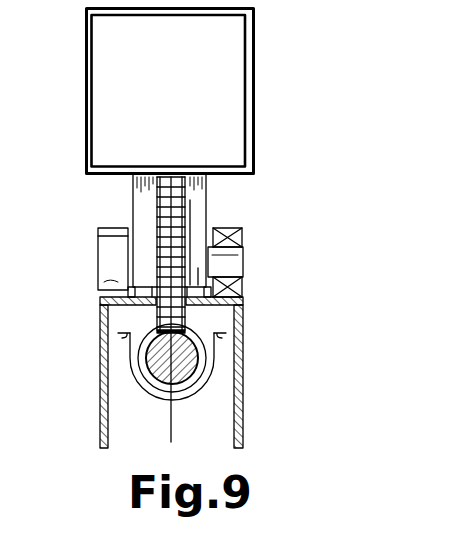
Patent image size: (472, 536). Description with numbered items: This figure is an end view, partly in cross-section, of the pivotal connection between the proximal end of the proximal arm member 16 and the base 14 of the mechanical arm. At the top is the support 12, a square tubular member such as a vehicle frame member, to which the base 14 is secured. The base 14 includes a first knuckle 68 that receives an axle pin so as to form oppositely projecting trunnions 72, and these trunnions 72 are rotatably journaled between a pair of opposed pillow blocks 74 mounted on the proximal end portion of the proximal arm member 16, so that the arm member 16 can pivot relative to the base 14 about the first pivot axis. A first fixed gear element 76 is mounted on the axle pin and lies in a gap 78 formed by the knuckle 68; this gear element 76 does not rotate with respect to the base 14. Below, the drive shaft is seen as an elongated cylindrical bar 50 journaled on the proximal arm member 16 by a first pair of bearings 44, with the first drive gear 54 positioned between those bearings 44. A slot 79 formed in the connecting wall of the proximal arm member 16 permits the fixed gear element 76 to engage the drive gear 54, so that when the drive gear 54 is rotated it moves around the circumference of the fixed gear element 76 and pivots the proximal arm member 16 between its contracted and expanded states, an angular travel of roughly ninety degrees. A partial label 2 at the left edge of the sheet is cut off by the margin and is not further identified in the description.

The apparatus 2 is at (6, 251).
The support 12 is at (84, 92).
The base 14 is at (101, 191).
The proximal arm member 16 is at (98, 437).
The first pair of bearings 44 is at (223, 313).
The elongated cylindrical bar 50 is at (183, 363).
The first drive gear 54 is at (177, 393).
The first knuckle 68 is at (195, 203).
The trunnions 72 is at (97, 270).
The pillow blocks 74 is at (98, 235).
The first fixed gear element 76 is at (172, 233).
The gap 78 is at (145, 308).
The slot 79 is at (200, 312).